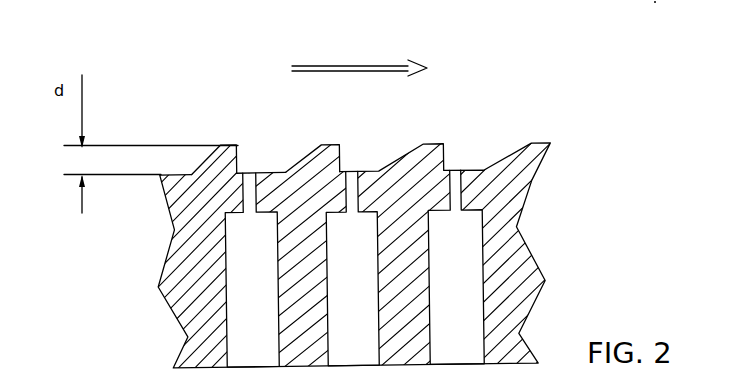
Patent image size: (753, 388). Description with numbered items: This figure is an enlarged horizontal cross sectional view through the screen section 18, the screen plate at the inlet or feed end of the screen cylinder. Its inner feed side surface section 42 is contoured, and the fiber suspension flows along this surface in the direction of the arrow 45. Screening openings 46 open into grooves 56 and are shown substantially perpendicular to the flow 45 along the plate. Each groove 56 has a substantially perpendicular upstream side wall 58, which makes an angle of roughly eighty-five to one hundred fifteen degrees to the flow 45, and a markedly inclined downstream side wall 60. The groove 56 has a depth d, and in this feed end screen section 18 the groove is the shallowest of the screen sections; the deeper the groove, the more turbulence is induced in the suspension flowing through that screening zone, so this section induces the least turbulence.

The screen section 18 is at (170, 263).
The inner feed side surface section 42 is at (505, 113).
The flow of fiber suspension 45 is at (335, 67).
The screening opening 46 is at (460, 171).
The groove 56 is at (272, 160).
The upstream side wall 58 is at (241, 150).
The downstream side wall 60 is at (316, 150).